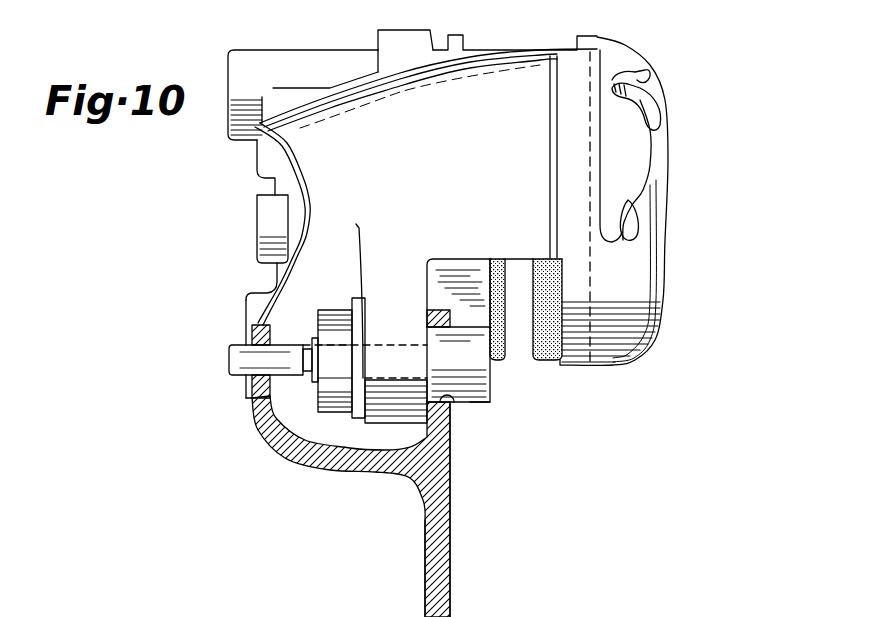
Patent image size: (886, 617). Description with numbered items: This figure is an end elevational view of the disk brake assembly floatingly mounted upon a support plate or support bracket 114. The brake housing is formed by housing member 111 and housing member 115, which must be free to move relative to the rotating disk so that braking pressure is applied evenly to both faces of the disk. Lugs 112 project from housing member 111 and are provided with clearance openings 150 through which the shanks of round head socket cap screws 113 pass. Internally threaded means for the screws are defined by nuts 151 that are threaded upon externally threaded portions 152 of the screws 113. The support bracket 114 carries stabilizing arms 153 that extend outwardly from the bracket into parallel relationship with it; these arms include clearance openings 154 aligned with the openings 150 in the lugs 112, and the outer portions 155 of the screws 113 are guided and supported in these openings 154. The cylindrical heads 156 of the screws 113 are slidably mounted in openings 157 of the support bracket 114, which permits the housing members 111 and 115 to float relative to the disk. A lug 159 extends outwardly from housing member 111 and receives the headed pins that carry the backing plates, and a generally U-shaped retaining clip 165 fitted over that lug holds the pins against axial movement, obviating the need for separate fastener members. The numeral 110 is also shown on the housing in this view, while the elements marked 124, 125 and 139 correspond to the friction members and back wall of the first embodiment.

The housing 110 is at (683, 162).
The housing member 111 is at (490, 53).
The lugs 112 is at (377, 424).
The round head socket cap screws 113 is at (480, 404).
The support bracket 114 is at (443, 582).
The housing member 115 is at (668, 263).
The bearing liner 124 is at (513, 243).
The bearing insert 125 is at (556, 315).
The bracket 139 is at (277, 275).
The clearance openings 150 is at (388, 347).
The nuts 151 is at (345, 308).
The externally threaded portions 152 is at (278, 425).
The stabilizing arms 153 is at (250, 330).
The clearance openings 154 is at (242, 378).
The outer portions 155 is at (235, 355).
The cylindrical heads 156 is at (492, 378).
The openings 157 is at (452, 396).
The lug 159 is at (417, 58).
The retaining clip 165 is at (375, 32).